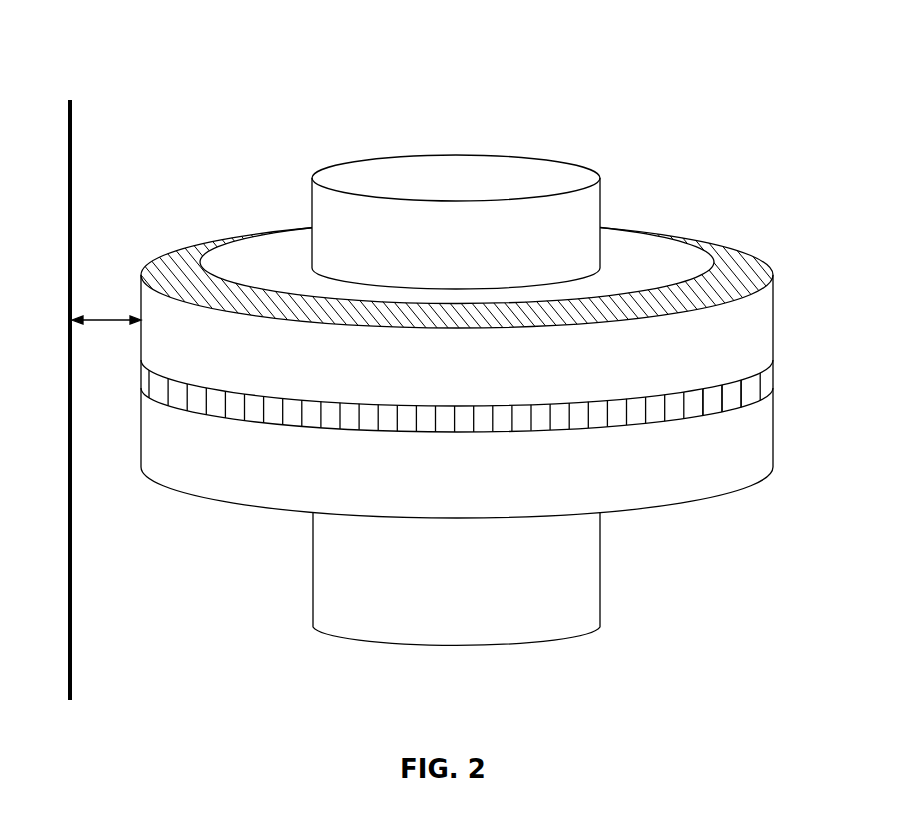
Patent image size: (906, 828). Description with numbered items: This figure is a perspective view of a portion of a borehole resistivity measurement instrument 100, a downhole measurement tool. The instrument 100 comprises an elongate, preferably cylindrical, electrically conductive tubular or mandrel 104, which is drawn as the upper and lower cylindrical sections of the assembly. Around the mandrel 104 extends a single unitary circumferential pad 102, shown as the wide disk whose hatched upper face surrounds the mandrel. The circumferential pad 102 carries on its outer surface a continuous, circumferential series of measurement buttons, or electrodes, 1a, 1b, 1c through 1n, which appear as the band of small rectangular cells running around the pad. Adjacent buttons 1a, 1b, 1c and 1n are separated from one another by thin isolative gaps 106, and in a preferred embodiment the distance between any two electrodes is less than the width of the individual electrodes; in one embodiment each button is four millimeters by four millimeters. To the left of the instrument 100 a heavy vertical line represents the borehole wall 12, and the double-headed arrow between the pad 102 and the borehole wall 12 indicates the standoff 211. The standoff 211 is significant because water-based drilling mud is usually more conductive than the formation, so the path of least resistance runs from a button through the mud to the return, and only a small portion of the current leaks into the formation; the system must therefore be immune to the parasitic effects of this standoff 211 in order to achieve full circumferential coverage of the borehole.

The borehole resistivity measurement instrument 100 is at (119, 36).
The borehole wall 12 is at (73, 128).
The standoff 211 is at (101, 316).
The circumferential pad 102 is at (742, 258).
The tubular or mandrel 104 is at (452, 166).
The isolative gaps 106 is at (491, 419).
The measurement button 1a is at (730, 393).
The measurement button 1b is at (713, 405).
The measurement button 1c is at (695, 404).
The measurement button 1n is at (752, 381).